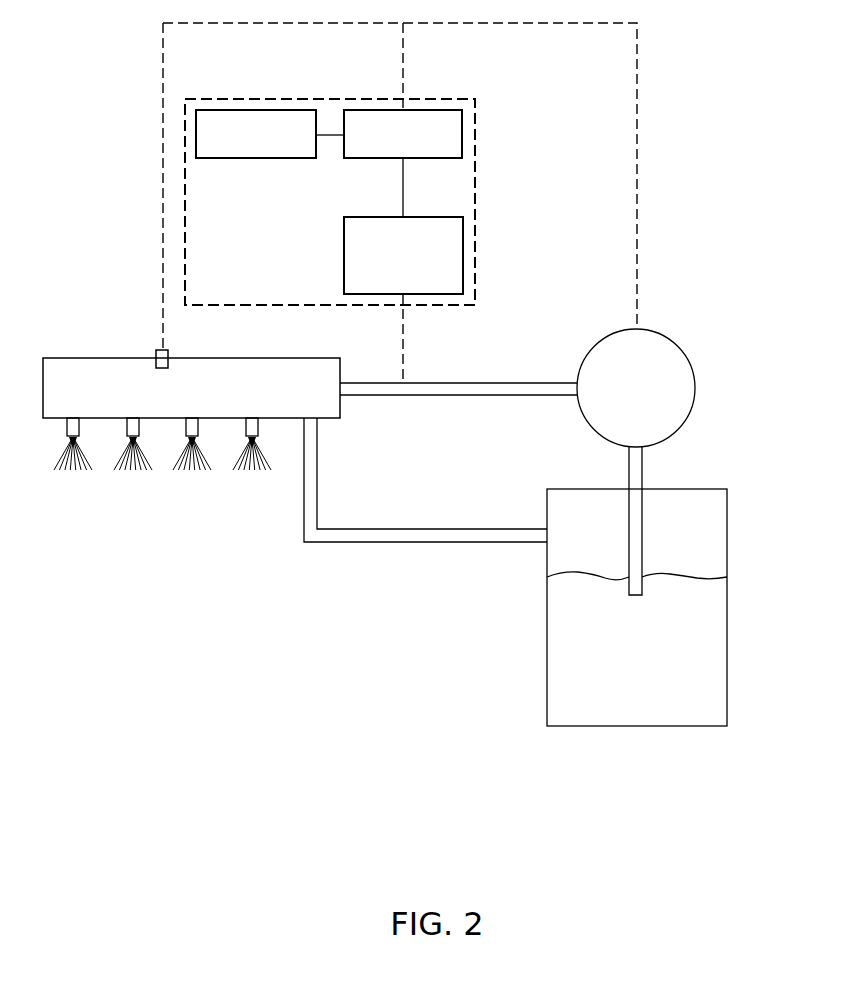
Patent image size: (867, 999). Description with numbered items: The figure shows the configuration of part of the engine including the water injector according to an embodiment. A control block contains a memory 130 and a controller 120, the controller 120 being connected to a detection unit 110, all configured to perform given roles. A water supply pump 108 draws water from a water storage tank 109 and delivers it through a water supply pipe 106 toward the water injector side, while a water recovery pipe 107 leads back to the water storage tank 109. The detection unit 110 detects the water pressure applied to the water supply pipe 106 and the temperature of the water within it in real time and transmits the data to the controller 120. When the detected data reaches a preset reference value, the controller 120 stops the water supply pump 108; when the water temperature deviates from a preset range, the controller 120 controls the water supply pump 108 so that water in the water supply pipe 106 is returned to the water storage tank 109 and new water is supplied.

The memory 130 is at (267, 110).
The controller 120 is at (428, 110).
The detection unit 110 is at (463, 257).
The water supply pipe 106 is at (447, 395).
The water recovery pipe 107 is at (387, 537).
The water supply pump 108 is at (660, 352).
The water storage tank 109 is at (548, 644).